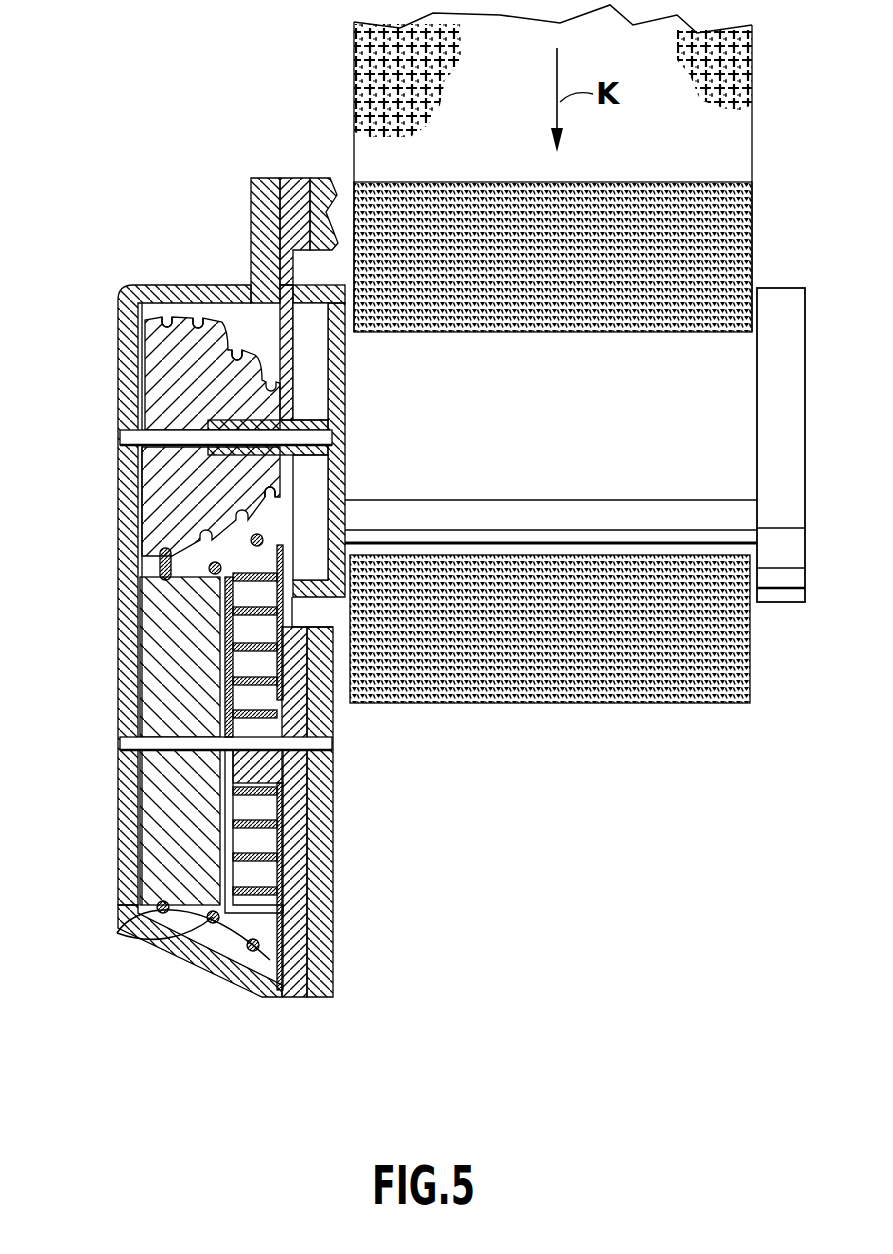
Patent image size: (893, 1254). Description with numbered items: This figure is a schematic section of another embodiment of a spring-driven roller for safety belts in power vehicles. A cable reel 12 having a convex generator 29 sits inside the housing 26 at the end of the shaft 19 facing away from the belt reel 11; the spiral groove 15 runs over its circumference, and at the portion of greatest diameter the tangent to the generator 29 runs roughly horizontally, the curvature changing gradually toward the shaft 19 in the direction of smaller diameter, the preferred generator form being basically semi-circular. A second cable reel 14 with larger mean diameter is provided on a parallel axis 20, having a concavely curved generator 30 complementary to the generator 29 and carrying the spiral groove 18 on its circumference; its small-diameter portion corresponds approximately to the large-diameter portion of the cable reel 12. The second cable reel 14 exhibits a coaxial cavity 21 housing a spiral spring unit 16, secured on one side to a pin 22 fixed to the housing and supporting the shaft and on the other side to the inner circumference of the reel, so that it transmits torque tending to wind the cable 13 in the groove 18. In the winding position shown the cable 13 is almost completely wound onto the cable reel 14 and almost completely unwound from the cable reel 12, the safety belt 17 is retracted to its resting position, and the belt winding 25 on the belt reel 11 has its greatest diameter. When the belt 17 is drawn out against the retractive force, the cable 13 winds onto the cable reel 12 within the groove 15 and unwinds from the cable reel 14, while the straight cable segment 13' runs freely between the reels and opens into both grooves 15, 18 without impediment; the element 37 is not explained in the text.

The belt reel 11 is at (748, 392).
The cable reel 12 is at (165, 398).
The cable 13 is at (138, 945).
The straight cable segment 13' is at (106, 578).
The second cable reel 14 is at (152, 806).
The spiral groove 15 is at (198, 330).
The spiral spring unit 16 is at (257, 867).
The safety belt 17 is at (725, 138).
The spiral groove 18 is at (160, 904).
The shaft 19 is at (332, 437).
The axis 20 is at (122, 742).
The coaxial cavity 21 is at (233, 812).
The pin 22 is at (282, 773).
The belt winding 25 is at (752, 216).
The housing 26 is at (137, 340).
The convex generator 29 is at (222, 333).
The concave generator 30 is at (185, 555).
The thin layer / plate 37 is at (263, 541).